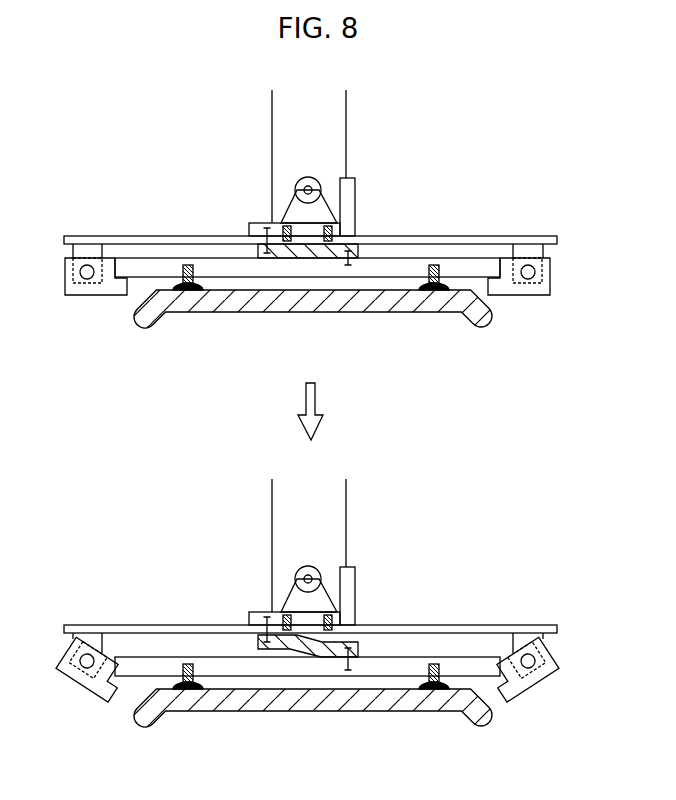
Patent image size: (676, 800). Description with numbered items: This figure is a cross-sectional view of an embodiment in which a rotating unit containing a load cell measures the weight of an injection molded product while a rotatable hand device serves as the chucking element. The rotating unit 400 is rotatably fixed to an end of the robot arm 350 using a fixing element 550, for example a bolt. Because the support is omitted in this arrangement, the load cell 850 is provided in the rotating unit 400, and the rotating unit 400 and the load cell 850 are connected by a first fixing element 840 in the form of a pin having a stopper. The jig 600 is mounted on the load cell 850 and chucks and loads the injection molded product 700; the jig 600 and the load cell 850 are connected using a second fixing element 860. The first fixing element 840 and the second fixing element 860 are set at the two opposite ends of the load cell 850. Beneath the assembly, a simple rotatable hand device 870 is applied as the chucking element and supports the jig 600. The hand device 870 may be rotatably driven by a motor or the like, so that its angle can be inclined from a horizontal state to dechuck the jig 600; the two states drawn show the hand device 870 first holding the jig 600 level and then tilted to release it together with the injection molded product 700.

The robot arm 350 is at (282, 141).
The rotating unit 400 is at (354, 184).
The fixing element 550 is at (277, 228).
The first fixing element 840 is at (265, 234).
The load cell 850 is at (357, 254).
The jig 600 is at (476, 265).
The second fixing element 860 is at (348, 268).
The injection molded product 700 is at (428, 302).
The hand device 870 is at (85, 297).